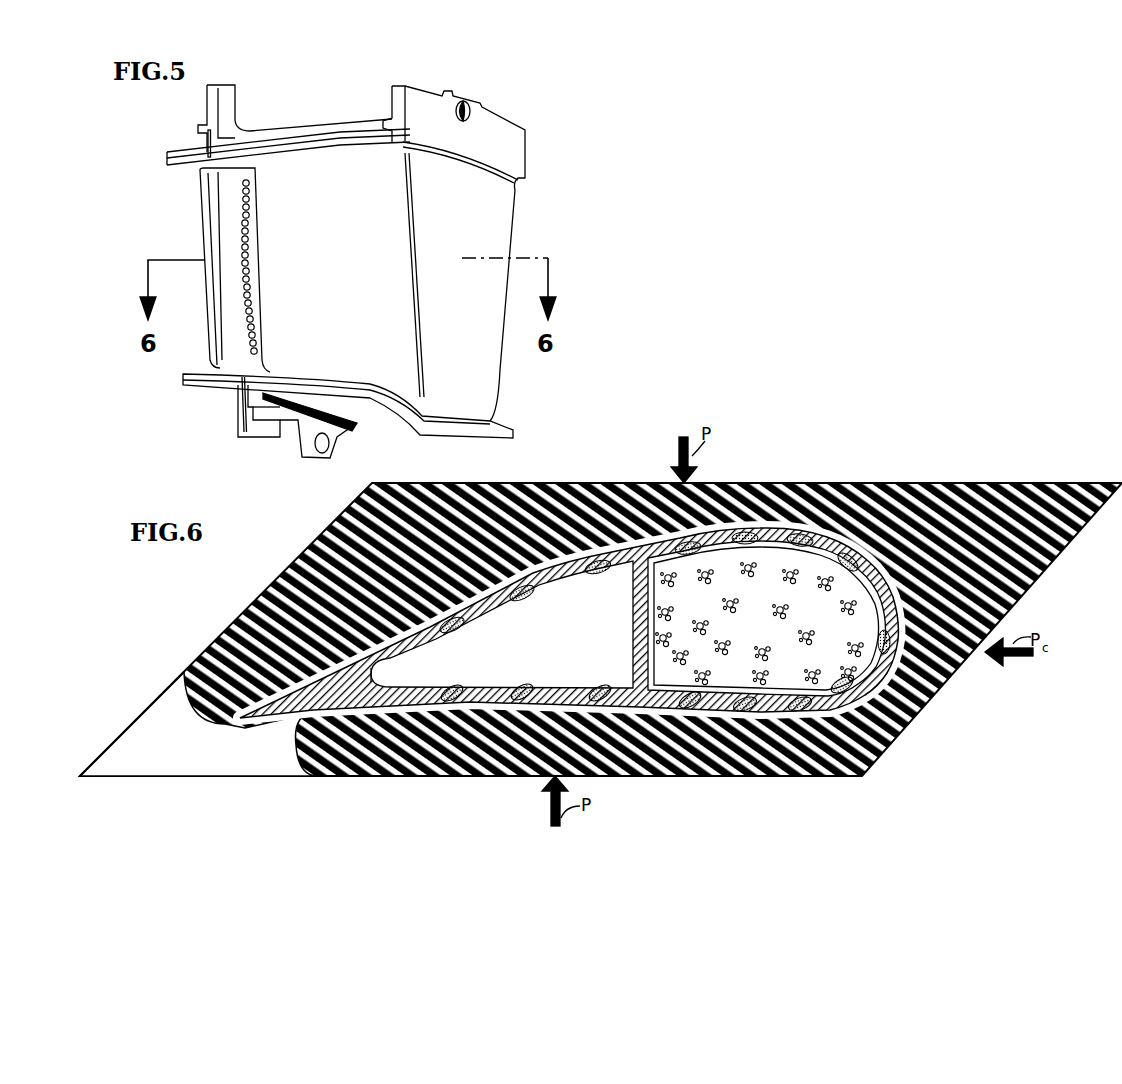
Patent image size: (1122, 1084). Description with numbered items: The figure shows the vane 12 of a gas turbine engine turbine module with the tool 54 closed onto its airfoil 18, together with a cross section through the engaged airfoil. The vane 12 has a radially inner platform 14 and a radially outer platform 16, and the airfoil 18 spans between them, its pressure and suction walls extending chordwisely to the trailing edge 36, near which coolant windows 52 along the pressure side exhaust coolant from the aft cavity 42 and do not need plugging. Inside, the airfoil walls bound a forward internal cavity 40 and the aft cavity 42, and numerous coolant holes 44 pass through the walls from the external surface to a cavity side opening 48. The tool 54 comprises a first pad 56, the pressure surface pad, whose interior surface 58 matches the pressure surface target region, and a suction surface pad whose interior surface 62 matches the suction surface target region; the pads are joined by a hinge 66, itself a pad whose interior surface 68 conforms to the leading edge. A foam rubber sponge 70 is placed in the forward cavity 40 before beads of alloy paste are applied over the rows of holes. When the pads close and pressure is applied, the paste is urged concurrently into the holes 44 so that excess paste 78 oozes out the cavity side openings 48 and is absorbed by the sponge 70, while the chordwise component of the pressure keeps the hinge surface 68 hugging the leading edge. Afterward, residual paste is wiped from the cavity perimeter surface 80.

In FIG. 5, the vane 12 is at (198, 118).
In FIG. 5, the radially inner platform 14 is at (498, 420).
In FIG. 5, the radially outer platform 16 is at (190, 168).
In FIG. 5, the airfoil 18 is at (245, 245).
In FIG. 5, the trailing edge 36 is at (235, 298).
In FIG. 6, the forward internal cavity 40 is at (752, 638).
In FIG. 6, the aft internal cavity 42 is at (590, 639).
In FIG. 6, the coolant holes 44 is at (437, 633).
In FIG. 6, the cavity side opening 48 is at (466, 627).
In FIG. 5, the coolant windows 52 is at (238, 272).
In FIG. 5, the tool 54 is at (500, 350).
In FIG. 5, the first pad 56 is at (343, 217).
In FIG. 6, the interior surface of first pad 58 is at (698, 693).
In FIG. 6, the interior surface of second pad 62 is at (711, 562).
In FIG. 5, the hinge 66 is at (486, 222).
In FIG. 6, the interior surface of hinge 68 is at (873, 660).
In FIG. 6, the foam rubber sponge 70 is at (752, 536).
In FIG. 6, the excess paste 78 is at (605, 681).
In FIG. 6, the cavity perimeter surface 80 is at (550, 594).